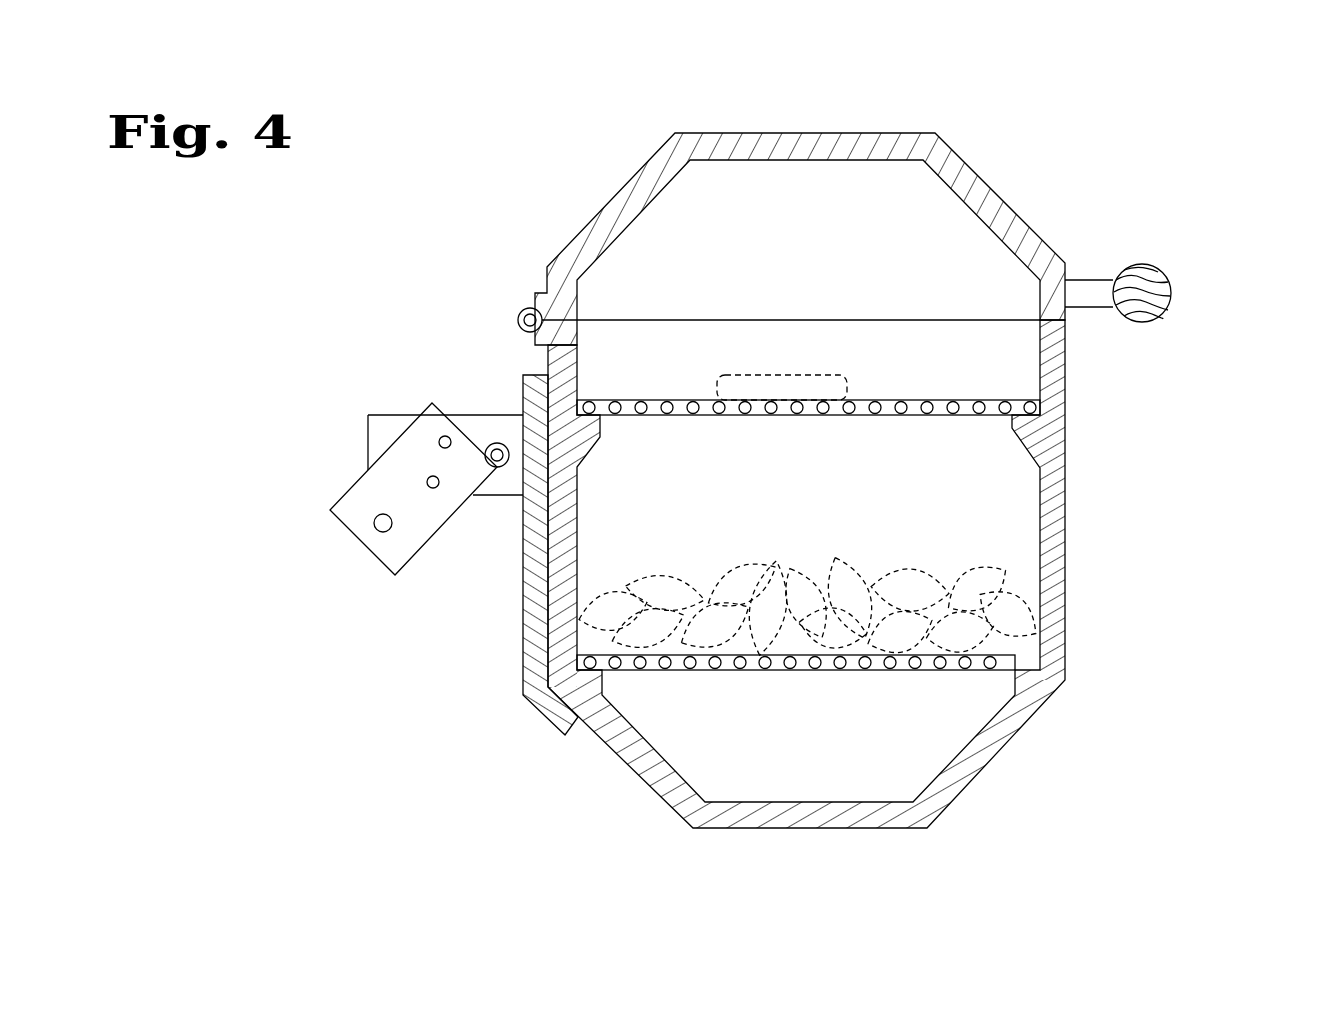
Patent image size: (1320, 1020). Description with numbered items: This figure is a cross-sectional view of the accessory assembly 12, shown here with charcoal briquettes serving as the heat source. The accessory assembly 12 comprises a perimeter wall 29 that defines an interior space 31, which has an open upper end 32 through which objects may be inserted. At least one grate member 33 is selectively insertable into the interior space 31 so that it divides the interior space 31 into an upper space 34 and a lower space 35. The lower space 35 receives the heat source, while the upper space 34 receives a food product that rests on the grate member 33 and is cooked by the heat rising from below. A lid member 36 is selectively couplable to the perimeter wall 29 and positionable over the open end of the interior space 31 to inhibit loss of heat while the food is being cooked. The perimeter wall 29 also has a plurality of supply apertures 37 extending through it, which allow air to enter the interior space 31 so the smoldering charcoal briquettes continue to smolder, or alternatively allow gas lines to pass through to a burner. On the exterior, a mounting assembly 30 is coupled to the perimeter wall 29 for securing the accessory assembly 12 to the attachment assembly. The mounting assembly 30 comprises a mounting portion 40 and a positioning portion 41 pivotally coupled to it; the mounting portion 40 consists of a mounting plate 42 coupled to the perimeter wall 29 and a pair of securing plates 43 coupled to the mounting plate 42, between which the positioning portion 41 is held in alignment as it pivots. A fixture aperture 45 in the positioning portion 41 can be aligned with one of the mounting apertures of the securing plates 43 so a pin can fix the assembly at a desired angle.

The accessory assembly 12 is at (862, 446).
The perimeter wall 29 is at (1050, 482).
The mounting assembly 30 is at (376, 458).
The interior space 31 is at (960, 688).
The open upper end 32 is at (975, 320).
The grate member 33 is at (1000, 407).
The upper space 34 is at (607, 357).
The lower space 35 is at (982, 530).
The lid member 36 is at (940, 157).
The supply apertures 37 is at (658, 772).
The mounting portion 40 is at (500, 497).
The positioning portion 41 is at (352, 518).
The mounting plate 42 is at (535, 648).
The securing plates 43 is at (378, 450).
The fixture aperture 45 is at (443, 438).